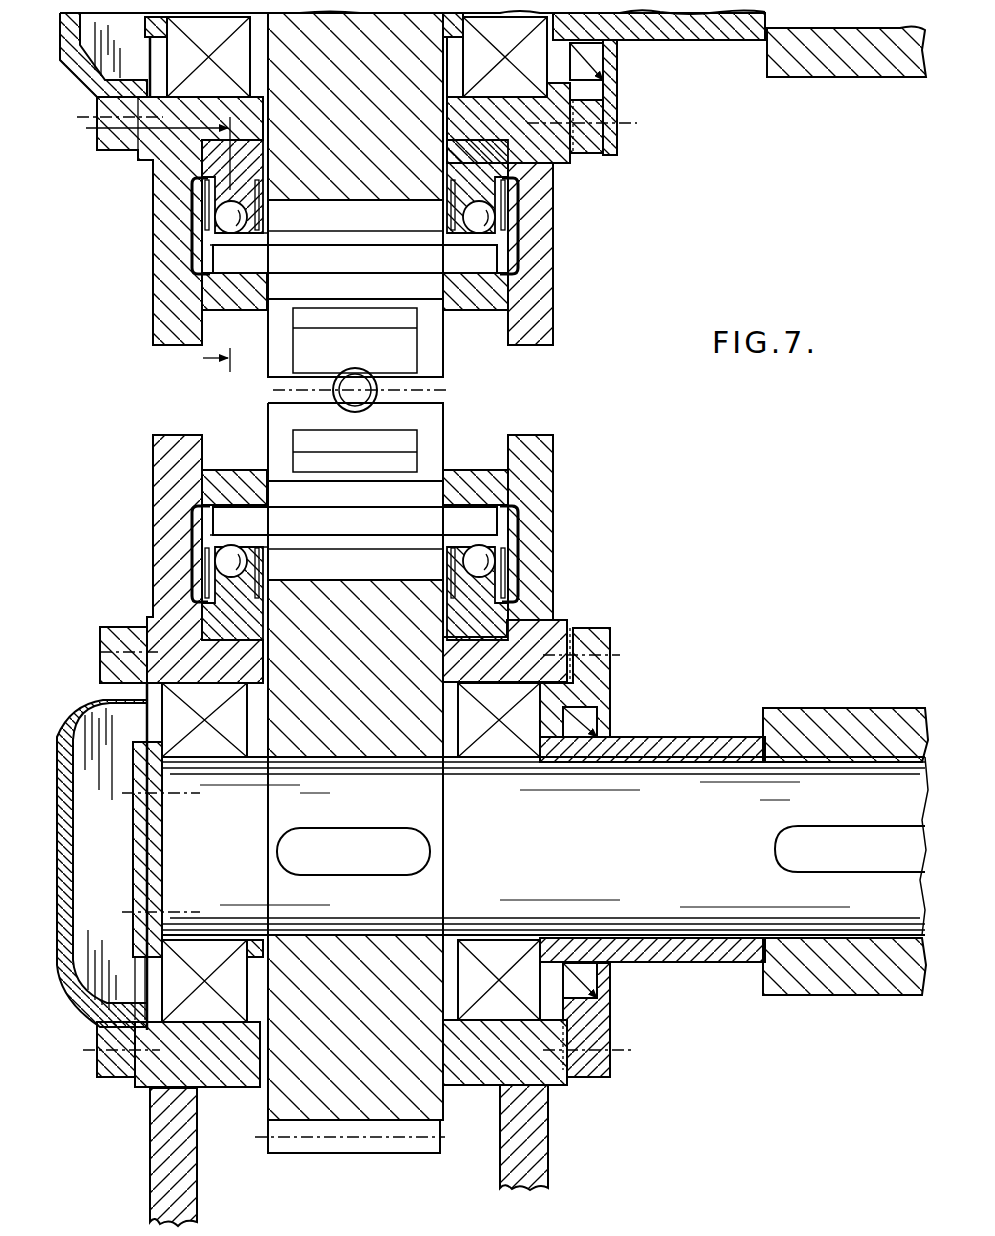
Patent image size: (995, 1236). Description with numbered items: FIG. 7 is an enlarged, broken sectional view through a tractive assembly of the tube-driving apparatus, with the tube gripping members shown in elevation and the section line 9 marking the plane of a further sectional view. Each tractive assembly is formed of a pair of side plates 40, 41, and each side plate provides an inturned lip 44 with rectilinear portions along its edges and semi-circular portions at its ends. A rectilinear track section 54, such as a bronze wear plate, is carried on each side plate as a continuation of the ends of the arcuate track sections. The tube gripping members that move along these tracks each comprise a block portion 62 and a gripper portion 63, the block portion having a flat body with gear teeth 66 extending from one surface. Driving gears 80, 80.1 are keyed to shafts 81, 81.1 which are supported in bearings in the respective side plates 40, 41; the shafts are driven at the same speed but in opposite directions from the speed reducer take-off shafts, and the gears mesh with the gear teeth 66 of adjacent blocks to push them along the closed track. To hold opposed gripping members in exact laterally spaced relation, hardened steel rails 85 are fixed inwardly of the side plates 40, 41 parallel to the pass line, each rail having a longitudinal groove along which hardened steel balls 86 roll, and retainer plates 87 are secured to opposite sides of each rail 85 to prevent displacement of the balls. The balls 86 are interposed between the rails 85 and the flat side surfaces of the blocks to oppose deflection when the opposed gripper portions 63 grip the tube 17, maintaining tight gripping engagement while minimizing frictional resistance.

The section line 9— 9 is at (143, 246).
The tube 17 is at (360, 412).
The side plate 40 is at (153, 327).
The side plate 41 is at (553, 295).
The inturned lip 44 is at (163, 350).
The rectilinear track section 54 is at (255, 292).
The block portion 62 is at (208, 261).
The gripper portion 63 is at (265, 370).
The gear teeth 66 is at (385, 213).
The driving gear 80 is at (553, 180).
The driving gear 80.1 is at (395, 735).
The shaft 81 is at (517, 15).
The shaft 81.1 is at (683, 783).
The hardened steel rail 85 is at (210, 163).
The hardened steel ball 86 is at (222, 217).
The retainer plate 87 is at (200, 258).